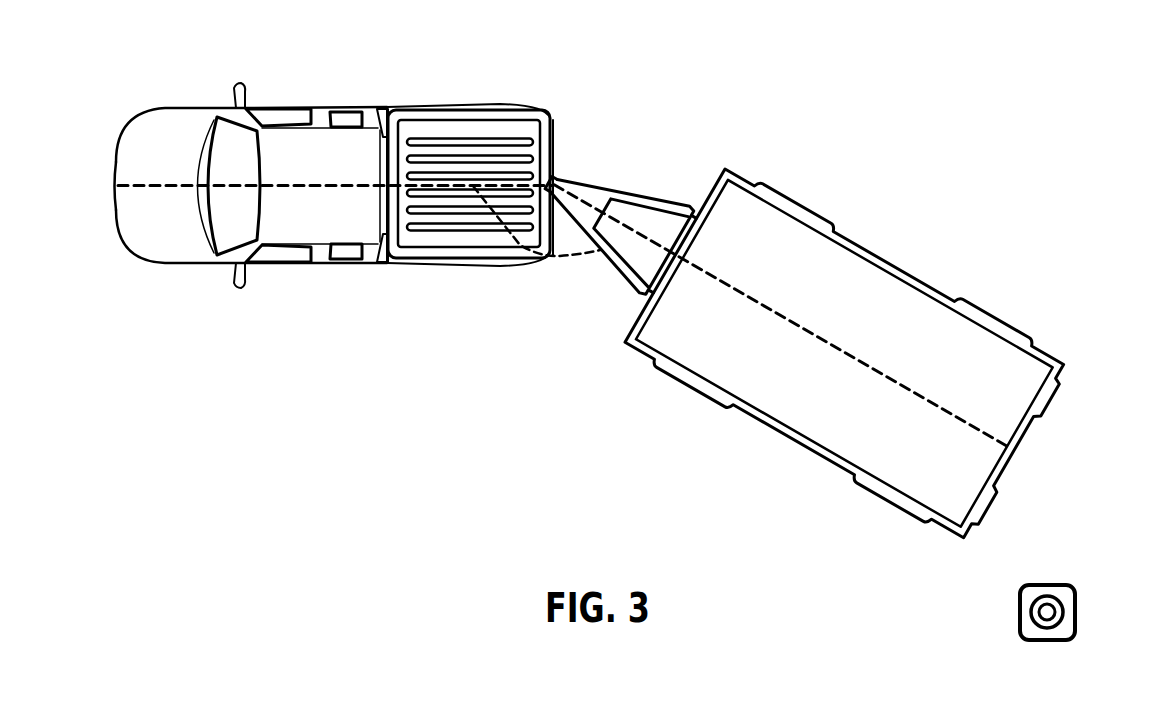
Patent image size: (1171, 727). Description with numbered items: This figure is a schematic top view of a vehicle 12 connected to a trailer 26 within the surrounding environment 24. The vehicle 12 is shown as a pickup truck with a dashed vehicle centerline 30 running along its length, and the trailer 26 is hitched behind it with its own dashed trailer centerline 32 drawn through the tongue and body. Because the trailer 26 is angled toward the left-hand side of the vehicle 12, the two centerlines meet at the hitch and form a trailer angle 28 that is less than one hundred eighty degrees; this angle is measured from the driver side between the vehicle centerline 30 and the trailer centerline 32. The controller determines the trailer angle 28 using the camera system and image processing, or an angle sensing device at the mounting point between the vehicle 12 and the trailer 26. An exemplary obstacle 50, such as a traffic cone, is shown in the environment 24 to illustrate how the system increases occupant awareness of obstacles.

The vehicle 12 is at (333, 180).
The environment 24 is at (782, 301).
The trailer 26 is at (870, 324).
The trailer angle 28 is at (571, 258).
The vehicle centerline 30 is at (347, 182).
The trailer centerline 32 is at (648, 238).
The obstacle 50 is at (1053, 584).